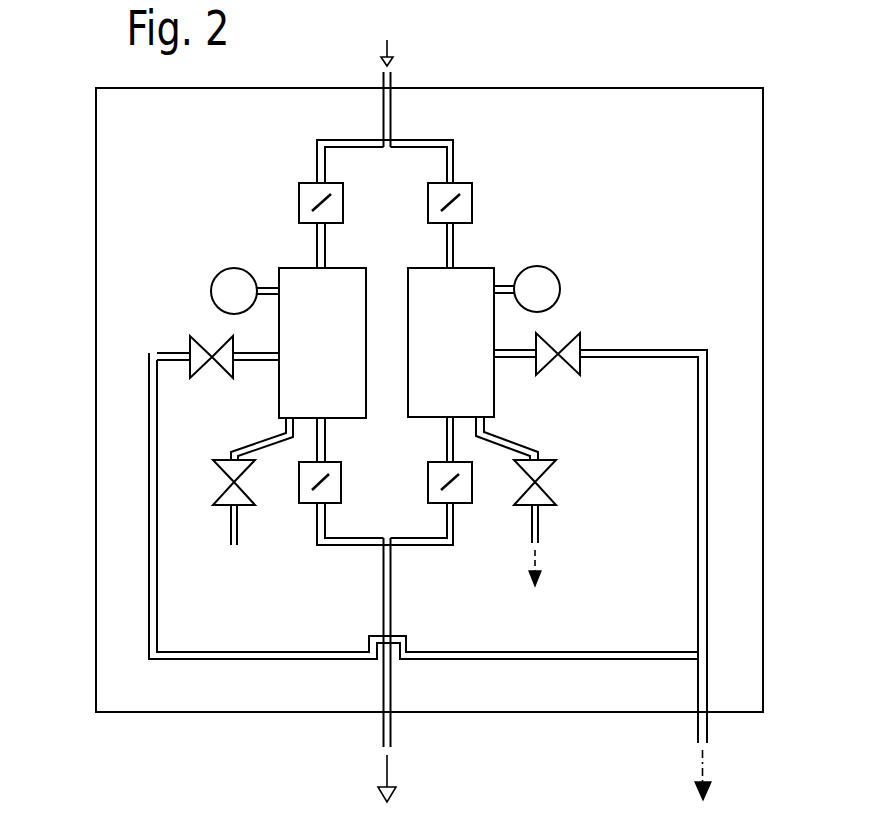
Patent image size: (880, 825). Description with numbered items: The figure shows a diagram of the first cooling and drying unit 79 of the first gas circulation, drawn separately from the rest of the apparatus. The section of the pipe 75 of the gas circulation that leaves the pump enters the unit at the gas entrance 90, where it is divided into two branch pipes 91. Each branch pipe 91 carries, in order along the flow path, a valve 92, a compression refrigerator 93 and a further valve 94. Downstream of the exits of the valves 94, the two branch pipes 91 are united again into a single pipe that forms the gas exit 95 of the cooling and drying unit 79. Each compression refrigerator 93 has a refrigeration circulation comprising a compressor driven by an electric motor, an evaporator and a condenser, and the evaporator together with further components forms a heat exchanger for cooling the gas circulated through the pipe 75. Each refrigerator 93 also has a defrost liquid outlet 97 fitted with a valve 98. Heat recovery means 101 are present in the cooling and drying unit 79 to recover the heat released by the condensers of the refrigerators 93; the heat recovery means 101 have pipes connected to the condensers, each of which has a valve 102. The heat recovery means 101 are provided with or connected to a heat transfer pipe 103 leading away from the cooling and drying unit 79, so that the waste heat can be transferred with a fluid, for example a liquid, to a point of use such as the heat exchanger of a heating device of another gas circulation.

The cooling and drying unit 79 is at (96, 88).
The pipe 75 is at (391, 76).
The gas entrance 90 is at (383, 76).
The branch pipes 91 is at (317, 162).
The valve 92 is at (299, 203).
The compression refrigerator 93 is at (293, 267).
The valve 102 is at (193, 340).
The heat recovery means 101 is at (694, 342).
The defrost liquid outlet 97 is at (287, 427).
The valve 98 is at (213, 503).
The valve 94 is at (299, 500).
The gas exit 95 is at (383, 714).
The heat transfer pipe 103 is at (707, 720).